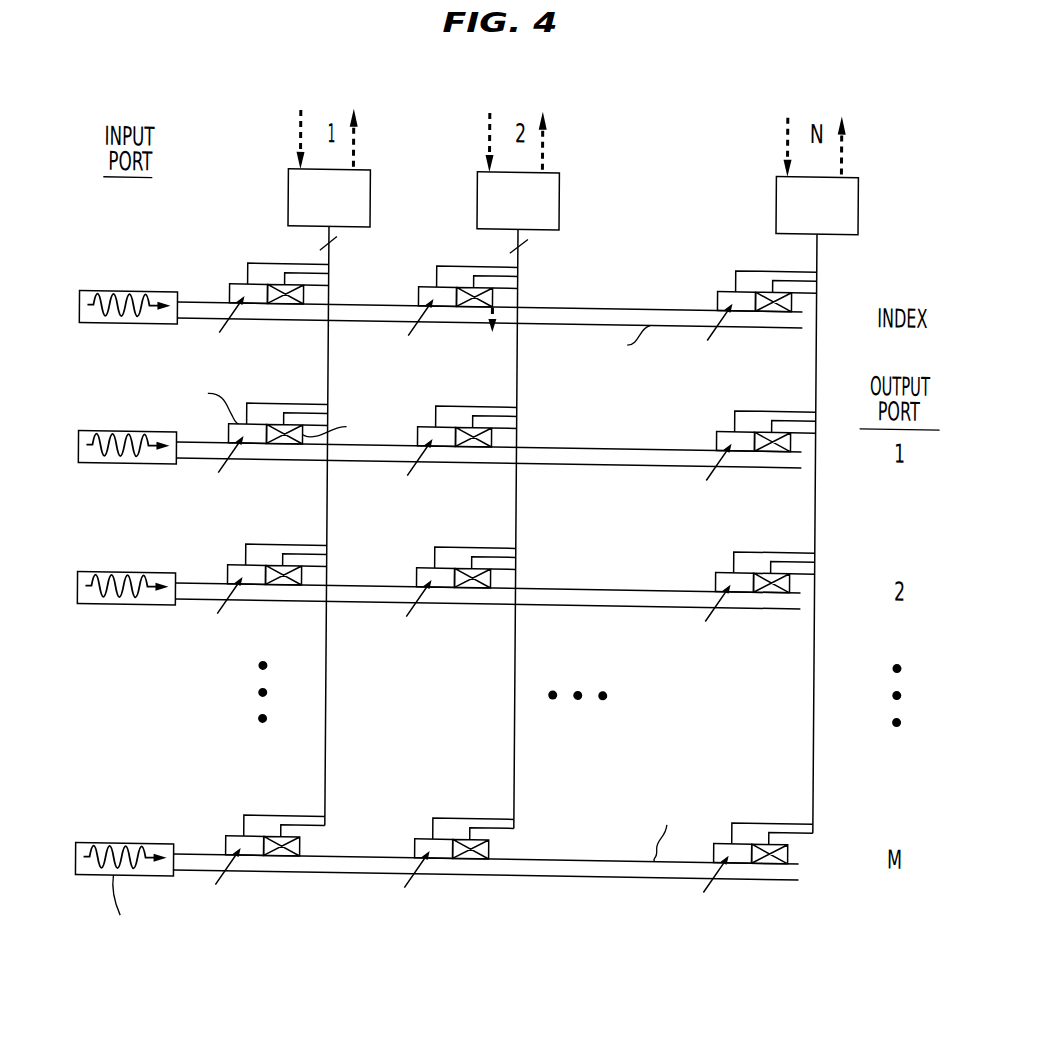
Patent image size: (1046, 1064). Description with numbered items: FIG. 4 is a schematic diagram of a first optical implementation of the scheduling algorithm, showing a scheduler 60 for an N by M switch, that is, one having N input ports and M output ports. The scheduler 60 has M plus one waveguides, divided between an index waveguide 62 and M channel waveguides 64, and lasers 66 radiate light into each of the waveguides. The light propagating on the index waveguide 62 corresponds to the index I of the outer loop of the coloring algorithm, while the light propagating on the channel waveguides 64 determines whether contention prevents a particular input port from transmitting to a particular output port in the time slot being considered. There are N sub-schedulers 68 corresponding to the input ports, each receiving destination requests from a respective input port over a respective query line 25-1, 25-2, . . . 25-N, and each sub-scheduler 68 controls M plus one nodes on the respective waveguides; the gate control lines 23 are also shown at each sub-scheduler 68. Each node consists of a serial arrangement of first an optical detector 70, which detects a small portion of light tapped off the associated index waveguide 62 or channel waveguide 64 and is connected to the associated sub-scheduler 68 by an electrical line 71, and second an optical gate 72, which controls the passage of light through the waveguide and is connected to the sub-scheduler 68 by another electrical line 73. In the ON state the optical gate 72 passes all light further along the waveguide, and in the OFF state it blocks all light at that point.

The scheduler 60 is at (466, 960).
The sub-scheduler 68 is at (288, 183).
The query line 25-1 is at (299, 109).
The query line 25-2 is at (488, 108).
The query line 25-N is at (786, 107).
The gate control line 23 is at (355, 143).
The index waveguide 62 is at (601, 302).
The channel waveguide 64 is at (607, 442).
The laser 66 is at (115, 292).
The optical detector 70 is at (229, 283).
The electrical line 71 is at (265, 262).
The optical gate 72 is at (308, 295).
The electrical line 73 is at (308, 275).